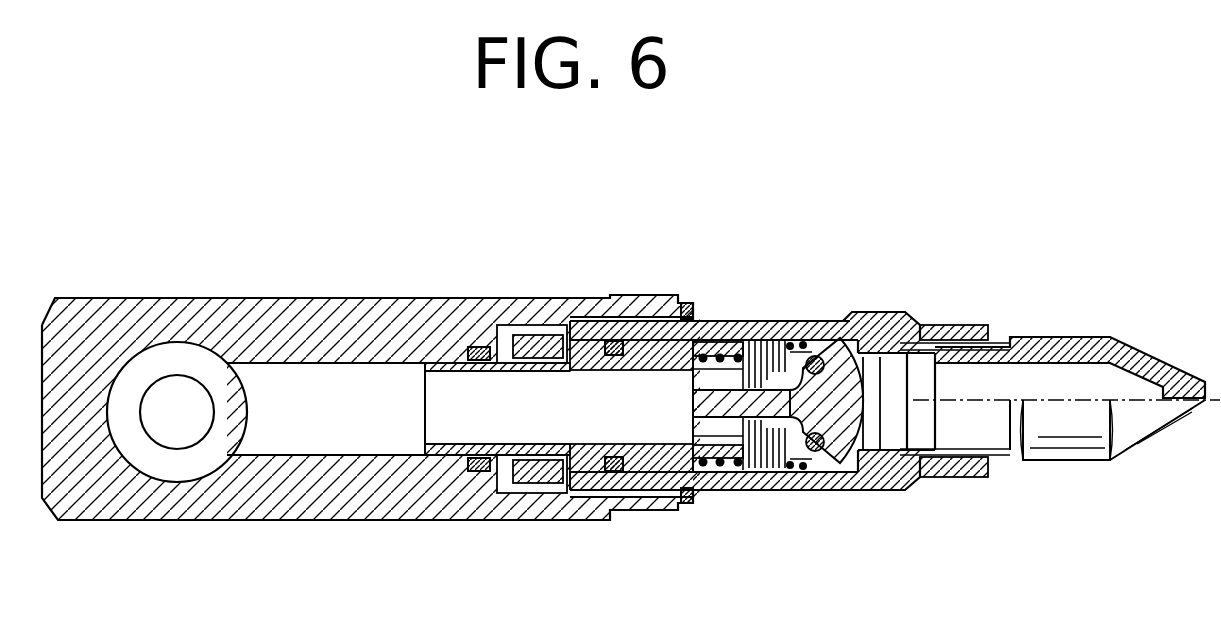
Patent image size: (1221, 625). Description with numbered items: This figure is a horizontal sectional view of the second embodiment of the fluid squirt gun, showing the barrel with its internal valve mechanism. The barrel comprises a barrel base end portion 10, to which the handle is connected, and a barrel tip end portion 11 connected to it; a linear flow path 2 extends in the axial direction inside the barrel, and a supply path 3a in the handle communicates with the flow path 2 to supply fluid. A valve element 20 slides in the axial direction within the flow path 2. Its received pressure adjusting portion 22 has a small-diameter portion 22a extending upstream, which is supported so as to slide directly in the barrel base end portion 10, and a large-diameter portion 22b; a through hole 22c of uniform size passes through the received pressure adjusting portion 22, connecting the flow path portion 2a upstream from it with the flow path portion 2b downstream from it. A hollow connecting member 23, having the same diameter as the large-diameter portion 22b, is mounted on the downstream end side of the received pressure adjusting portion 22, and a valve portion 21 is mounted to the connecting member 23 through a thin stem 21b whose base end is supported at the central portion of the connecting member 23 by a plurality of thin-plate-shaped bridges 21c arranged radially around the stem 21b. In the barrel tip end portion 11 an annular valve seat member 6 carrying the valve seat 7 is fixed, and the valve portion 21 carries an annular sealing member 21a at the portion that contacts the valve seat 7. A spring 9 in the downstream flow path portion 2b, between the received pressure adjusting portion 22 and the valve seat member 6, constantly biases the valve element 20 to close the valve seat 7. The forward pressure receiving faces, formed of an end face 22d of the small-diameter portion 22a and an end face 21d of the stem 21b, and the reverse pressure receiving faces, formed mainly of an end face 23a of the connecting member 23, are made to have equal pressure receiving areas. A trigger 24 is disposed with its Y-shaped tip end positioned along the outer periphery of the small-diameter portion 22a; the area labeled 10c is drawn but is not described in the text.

The flow path 2 is at (307, 404).
The flow path portion upstream 2a is at (400, 405).
The flow path portion downstream 2b is at (748, 487).
The supply path 3a is at (172, 392).
The valve seat member 6 is at (818, 462).
The valve seat 7 is at (848, 340).
The spring 9 is at (745, 350).
The barrel base end portion 10 is at (382, 298).
The seal groove 10c is at (513, 322).
The barrel tip end portion 11 is at (948, 335).
The valve element 20 is at (878, 323).
The valve portion 21 is at (866, 490).
The annular sealing member 21a is at (842, 457).
The stem 21b is at (785, 345).
The bridges 21c is at (720, 345).
The end face of the stem 21d is at (690, 405).
The received pressure adjusting portion 22 is at (617, 330).
The small-diameter portion 22a is at (490, 460).
The large-diameter portion 22b is at (582, 300).
The through hole 22c is at (538, 412).
The end face of the small-diameter portion 22d is at (432, 455).
The connecting member 23 is at (642, 330).
The end face of the connecting member 23a is at (718, 497).
The trigger 24 is at (537, 345).